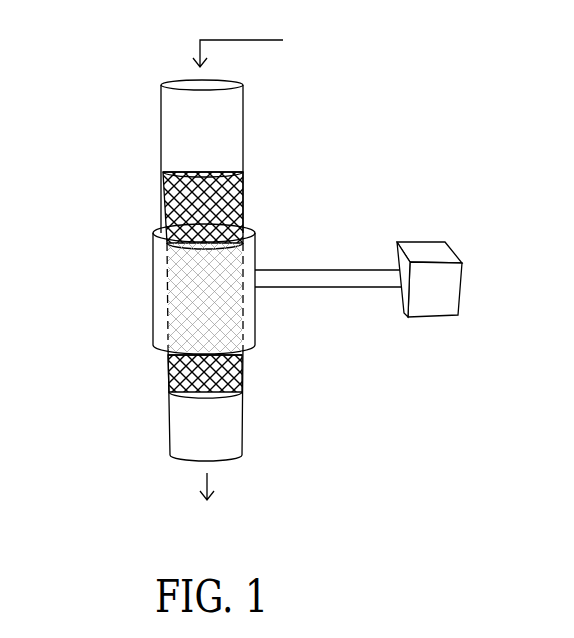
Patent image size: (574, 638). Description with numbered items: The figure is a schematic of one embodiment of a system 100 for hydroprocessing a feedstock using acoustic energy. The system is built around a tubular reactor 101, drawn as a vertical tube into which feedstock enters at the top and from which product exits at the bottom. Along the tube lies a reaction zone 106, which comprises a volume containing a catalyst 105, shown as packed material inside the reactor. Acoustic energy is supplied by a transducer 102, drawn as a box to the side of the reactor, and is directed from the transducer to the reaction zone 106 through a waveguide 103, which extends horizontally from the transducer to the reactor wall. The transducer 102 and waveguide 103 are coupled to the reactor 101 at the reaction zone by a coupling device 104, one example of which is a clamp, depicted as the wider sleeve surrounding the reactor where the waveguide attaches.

The system 100 is at (110, 102).
The reactor 101 is at (222, 133).
The transducer 102 is at (426, 248).
The waveguide 103 is at (319, 268).
The coupling device 104 is at (246, 325).
The catalyst 105 is at (243, 186).
The reaction zone 106 is at (142, 252).